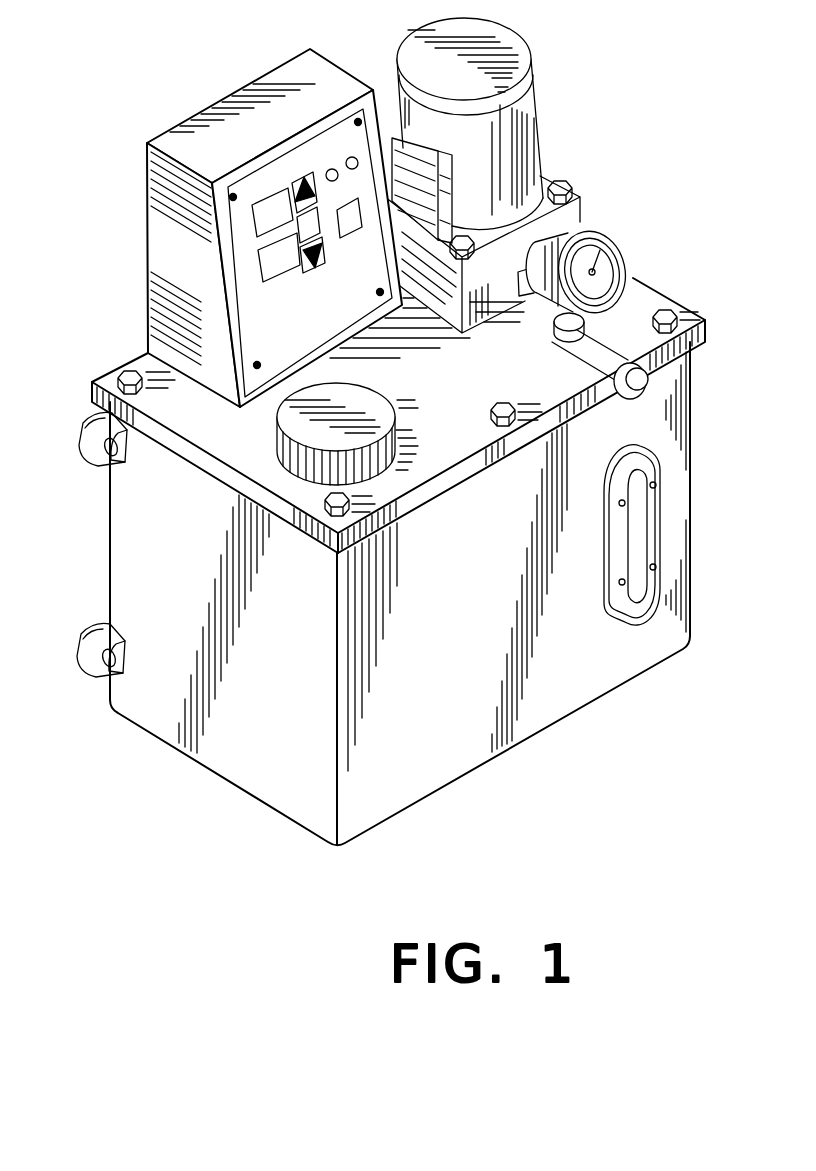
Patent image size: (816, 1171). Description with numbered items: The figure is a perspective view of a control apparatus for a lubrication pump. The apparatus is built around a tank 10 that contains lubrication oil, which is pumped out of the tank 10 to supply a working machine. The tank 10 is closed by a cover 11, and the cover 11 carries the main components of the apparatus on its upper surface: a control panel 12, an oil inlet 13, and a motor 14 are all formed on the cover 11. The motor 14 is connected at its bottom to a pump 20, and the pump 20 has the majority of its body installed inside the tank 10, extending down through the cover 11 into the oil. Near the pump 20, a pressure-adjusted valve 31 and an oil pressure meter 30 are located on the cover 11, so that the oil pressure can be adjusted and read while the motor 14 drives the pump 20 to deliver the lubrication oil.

The tank 10 is at (563, 705).
The cover 11 is at (637, 298).
The control panel 12 is at (317, 148).
The oil inlet 13 is at (384, 421).
The motor 14 is at (527, 117).
The pump 20 is at (445, 313).
The oil pressure meter 30 is at (585, 231).
The pressure-adjusted valve 31 is at (636, 384).